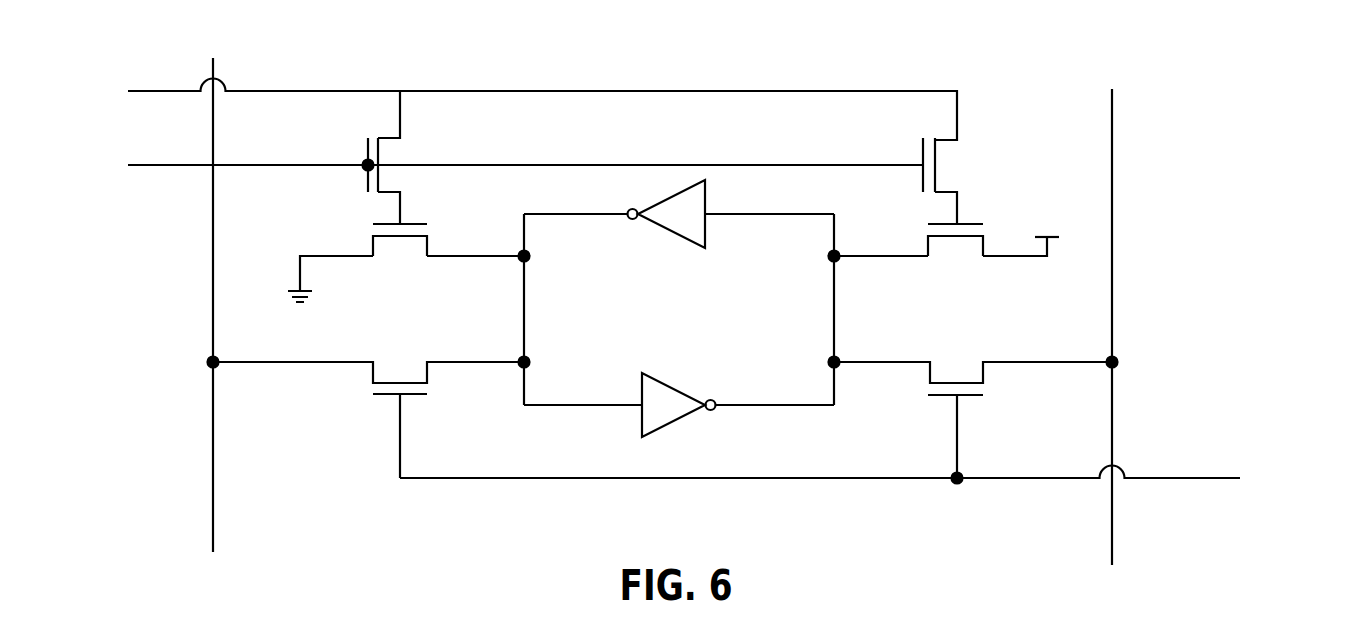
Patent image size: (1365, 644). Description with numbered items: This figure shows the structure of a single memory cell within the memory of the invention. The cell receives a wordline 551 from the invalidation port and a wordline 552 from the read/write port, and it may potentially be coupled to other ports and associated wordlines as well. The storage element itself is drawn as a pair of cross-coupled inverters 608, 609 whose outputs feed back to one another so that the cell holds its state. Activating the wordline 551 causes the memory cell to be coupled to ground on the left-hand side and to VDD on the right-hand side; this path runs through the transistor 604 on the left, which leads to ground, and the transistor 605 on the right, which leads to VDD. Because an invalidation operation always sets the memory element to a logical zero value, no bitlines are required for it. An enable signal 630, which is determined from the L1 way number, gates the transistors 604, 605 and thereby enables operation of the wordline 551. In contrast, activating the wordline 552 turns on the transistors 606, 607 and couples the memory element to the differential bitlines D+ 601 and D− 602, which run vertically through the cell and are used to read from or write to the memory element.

The differential bitline D+ 601 is at (213, 278).
The differential bitline D− 602 is at (1112, 300).
The wordline 551 is at (497, 94).
The wordline 552 is at (871, 472).
The enable signal 630 is at (488, 150).
The transistor 604 is at (406, 196).
The transistor 605 is at (951, 204).
The transistor 606 is at (366, 415).
The transistor 607 is at (976, 418).
The inverter 608 is at (679, 224).
The inverter 609 is at (679, 403).